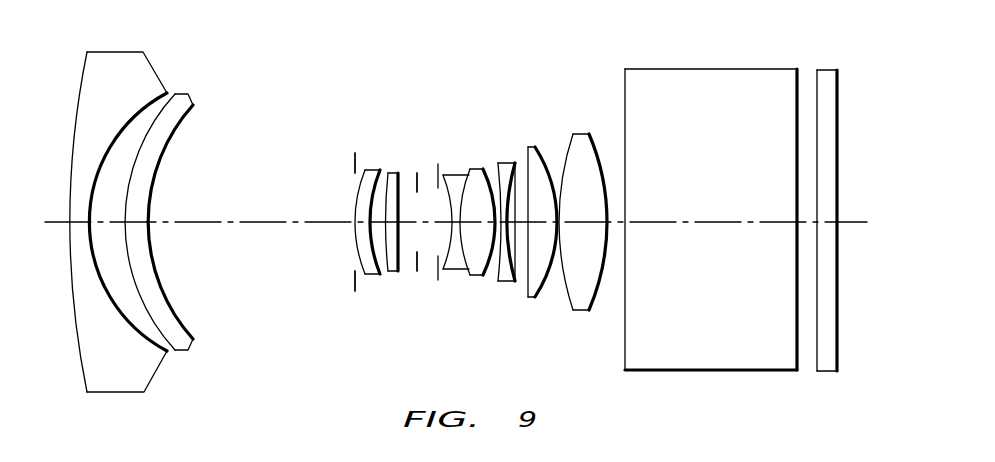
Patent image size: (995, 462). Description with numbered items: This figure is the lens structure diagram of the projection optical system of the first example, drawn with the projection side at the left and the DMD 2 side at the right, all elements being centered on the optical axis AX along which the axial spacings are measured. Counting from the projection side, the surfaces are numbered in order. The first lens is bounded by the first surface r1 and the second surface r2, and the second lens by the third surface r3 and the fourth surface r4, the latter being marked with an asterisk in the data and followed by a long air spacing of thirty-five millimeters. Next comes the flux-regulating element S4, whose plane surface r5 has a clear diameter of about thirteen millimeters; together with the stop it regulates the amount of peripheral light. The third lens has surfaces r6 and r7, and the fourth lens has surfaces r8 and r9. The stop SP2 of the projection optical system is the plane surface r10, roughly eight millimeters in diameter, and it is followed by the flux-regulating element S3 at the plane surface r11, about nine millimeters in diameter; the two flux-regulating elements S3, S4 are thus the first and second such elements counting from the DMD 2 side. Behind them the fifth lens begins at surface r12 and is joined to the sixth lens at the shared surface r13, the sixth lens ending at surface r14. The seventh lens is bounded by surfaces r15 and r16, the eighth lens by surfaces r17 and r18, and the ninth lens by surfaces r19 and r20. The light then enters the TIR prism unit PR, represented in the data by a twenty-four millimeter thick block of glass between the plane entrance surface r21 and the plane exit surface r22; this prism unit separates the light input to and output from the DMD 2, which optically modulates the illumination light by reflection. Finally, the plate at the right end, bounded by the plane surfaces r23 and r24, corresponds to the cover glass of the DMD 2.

The optical axis AX is at (270, 220).
The first surface r1 is at (82, 90).
The second surface r2 is at (98, 277).
The third surface r3 is at (145, 140).
The fourth surface r4 is at (163, 280).
The fifth surface r5 is at (355, 163).
The flux-regulating element S4 is at (355, 283).
The sixth surface r6 is at (357, 185).
The seventh surface r7 is at (368, 211).
The eighth surface r8 is at (374, 241).
The ninth surface r9 is at (403, 170).
The stop SP2 is at (413, 270).
The tenth surface r10 is at (423, 170).
The flux-regulating element S3 is at (436, 275).
The eleventh surface r11 is at (445, 173).
The twelfth surface r12 is at (467, 265).
The thirteenth surface r13 is at (478, 280).
The fourteenth surface r14 is at (492, 168).
The fifteenth surface r15 is at (503, 163).
The sixteenth surface r16 is at (505, 285).
The seventeenth surface r17 is at (528, 148).
The eighteenth surface r18 is at (543, 297).
The nineteenth surface r19 is at (563, 163).
The twentieth surface r20 is at (598, 143).
The twenty-first surface r21 is at (625, 357).
The TIR prism unit PR is at (710, 372).
The twenty-second surface r22 is at (798, 83).
The twenty-third surface r23 is at (818, 305).
The DMD 2 is at (825, 372).
The twenty-fourth surface r24 is at (840, 113).